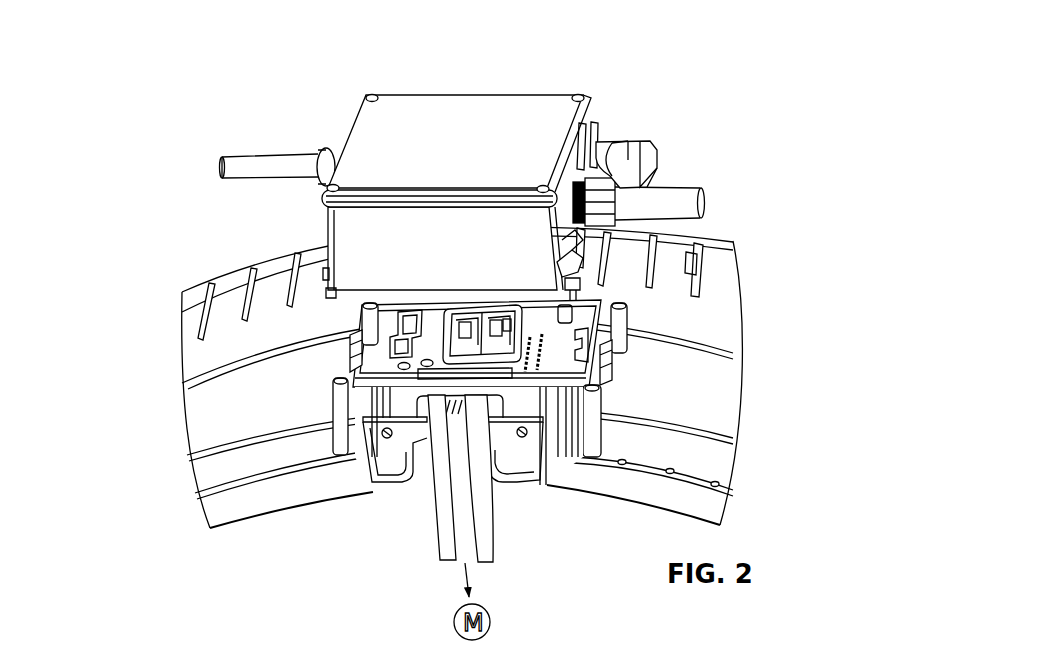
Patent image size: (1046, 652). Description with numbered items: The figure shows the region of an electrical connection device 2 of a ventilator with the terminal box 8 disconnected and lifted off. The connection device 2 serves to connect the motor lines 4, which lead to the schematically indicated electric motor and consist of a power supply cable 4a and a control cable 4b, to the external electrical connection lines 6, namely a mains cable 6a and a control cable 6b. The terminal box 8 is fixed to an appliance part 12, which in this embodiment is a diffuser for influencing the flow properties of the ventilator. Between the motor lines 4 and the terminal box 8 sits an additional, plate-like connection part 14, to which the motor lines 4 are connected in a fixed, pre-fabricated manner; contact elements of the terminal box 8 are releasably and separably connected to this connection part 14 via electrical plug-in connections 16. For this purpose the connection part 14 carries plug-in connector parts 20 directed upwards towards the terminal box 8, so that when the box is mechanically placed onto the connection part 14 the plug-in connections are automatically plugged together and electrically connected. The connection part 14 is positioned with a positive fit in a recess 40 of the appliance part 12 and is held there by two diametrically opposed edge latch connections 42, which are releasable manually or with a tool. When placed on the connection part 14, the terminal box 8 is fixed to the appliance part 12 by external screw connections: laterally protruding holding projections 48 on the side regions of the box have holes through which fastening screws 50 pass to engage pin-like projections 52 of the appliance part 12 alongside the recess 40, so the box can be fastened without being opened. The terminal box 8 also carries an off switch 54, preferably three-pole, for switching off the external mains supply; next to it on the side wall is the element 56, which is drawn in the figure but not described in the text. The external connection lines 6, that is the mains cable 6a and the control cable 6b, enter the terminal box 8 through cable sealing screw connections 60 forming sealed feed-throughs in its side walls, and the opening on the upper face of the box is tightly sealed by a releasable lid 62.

The electrical connection device 2 is at (726, 101).
The motor lines 4 is at (483, 483).
The power supply cable 4a is at (442, 507).
The control cable 4b is at (489, 545).
The external electrical connection lines 6 is at (493, 154).
The mains cable 6a is at (682, 202).
The control cable 6b is at (258, 172).
The terminal box 8 is at (449, 175).
The appliance part 12 is at (728, 302).
The connection part 14 is at (405, 398).
The plug-in connections 16 is at (470, 306).
The plug-in connector parts 20 is at (418, 322).
The recess 40 is at (559, 402).
The edge latch connections 42 is at (347, 347).
The holding projections 48 is at (562, 268).
The fastening screws 50 is at (578, 288).
The pin-like projections 52 is at (358, 316).
The off switch 54 is at (608, 143).
The block 56 is at (636, 150).
The cable sealing screw connection 60 is at (326, 163).
The releasable lid 62 is at (468, 160).